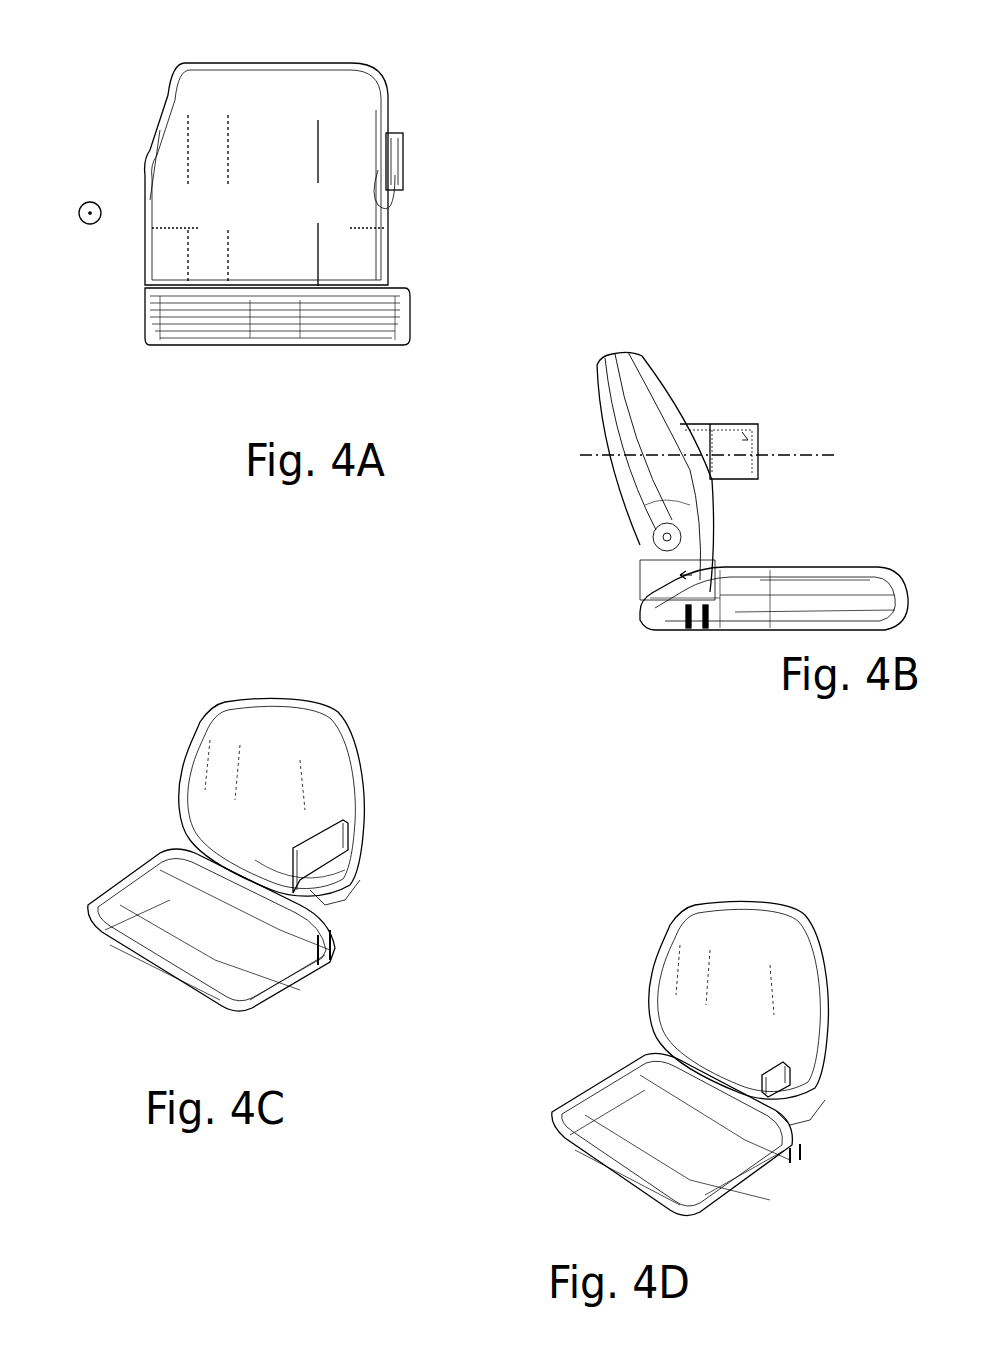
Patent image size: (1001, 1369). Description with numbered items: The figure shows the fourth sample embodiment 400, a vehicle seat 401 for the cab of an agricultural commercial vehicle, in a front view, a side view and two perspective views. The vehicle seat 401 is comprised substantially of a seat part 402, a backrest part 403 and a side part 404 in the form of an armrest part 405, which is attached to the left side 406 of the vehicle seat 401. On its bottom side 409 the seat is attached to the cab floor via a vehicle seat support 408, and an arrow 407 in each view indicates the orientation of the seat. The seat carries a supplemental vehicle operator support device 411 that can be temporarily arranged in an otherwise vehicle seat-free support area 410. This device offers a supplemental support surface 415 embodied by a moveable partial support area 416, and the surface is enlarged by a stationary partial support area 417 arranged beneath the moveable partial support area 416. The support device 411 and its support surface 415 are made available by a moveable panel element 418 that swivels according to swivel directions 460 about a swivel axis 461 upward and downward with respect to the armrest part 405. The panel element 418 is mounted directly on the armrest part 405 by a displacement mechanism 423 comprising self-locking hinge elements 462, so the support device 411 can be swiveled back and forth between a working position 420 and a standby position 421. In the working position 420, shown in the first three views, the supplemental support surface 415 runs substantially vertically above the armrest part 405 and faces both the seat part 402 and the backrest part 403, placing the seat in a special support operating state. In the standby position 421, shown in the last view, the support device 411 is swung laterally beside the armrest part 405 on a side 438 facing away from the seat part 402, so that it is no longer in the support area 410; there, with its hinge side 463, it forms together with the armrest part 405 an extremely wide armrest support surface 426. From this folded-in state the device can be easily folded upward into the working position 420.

In FIG. 4A, the fourth sample embodiment 400 is at (751, 111).
In FIG. 4A, the vehicle seat 401 is at (228, 377).
In FIG. 4B, the vehicle seat 401 is at (519, 571).
In FIG. 4C, the vehicle seat 401 is at (357, 639).
In FIG. 4D, the vehicle seat 401 is at (531, 1171).
In FIG. 4A, the seat part 402 is at (150, 315).
In FIG. 4B, the seat part 402 is at (774, 598).
In FIG. 4C, the seat part 402 is at (130, 880).
In FIG. 4D, the seat part 402 is at (598, 1095).
In FIG. 4A, the backrest part 403 is at (296, 117).
In FIG. 4B, the backrest part 403 is at (598, 358).
In FIG. 4C, the backrest part 403 is at (255, 718).
In FIG. 4D, the backrest part 403 is at (710, 925).
In FIG. 4A, the side part 404 is at (369, 202).
In FIG. 4B, the side part 404 is at (706, 473).
In FIG. 4C, the side part 404 is at (293, 880).
In FIG. 4A, the armrest part 405 is at (404, 188).
In FIG. 4B, the armrest part 405 is at (760, 476).
In FIG. 4C, the armrest part 405 is at (300, 882).
In FIG. 4D, the armrest part 405 is at (763, 1083).
In FIG. 4A, the left side 406 is at (690, 249).
In FIG. 4C, the left side 406 is at (465, 955).
In FIG. 4D, the left side 406 is at (895, 1155).
In FIG. 4A, the forward direction 407 is at (93, 200).
In FIG. 4B, the forward direction 407 is at (896, 535).
In FIG. 4C, the forward direction 407 is at (172, 945).
In FIG. 4D, the forward direction 407 is at (640, 1145).
In FIG. 4A, the vehicle seat support 408 is at (170, 342).
In FIG. 4B, the vehicle seat support 408 is at (688, 630).
In FIG. 4C, the vehicle seat support 408 is at (305, 968).
In FIG. 4D, the vehicle seat support 408 is at (798, 1163).
In FIG. 4A, the bottom side 409 is at (266, 358).
In FIG. 4B, the bottom side 409 is at (729, 645).
In FIG. 4C, the bottom side 409 is at (252, 1012).
In FIG. 4D, the bottom side 409 is at (768, 1190).
In FIG. 4A, the vehicle seat-free support area 410 is at (373, 155).
In FIG. 4B, the vehicle seat-free support area 410 is at (773, 432).
In FIG. 4C, the vehicle seat-free support area 410 is at (369, 811).
In FIG. 4D, the vehicle seat-free support area 410 is at (776, 1056).
In FIG. 4A, the supplemental vehicle operator support device 411 is at (453, 138).
In FIG. 4B, the supplemental vehicle operator support device 411 is at (737, 418).
In FIG. 4C, the supplemental vehicle operator support device 411 is at (342, 842).
In FIG. 4D, the supplemental vehicle operator support device 411 is at (815, 1068).
In FIG. 4A, the supplemental support surface 415 is at (381, 145).
In FIG. 4B, the supplemental support surface 415 is at (753, 431).
In FIG. 4C, the supplemental support surface 415 is at (311, 831).
In FIG. 4D, the supplemental support surface 415 is at (767, 1063).
In FIG. 4A, the moveable partial support area 416 is at (388, 135).
In FIG. 4B, the moveable partial support area 416 is at (713, 428).
In FIG. 4C, the moveable partial support area 416 is at (298, 850).
In FIG. 4D, the moveable partial support area 416 is at (761, 1073).
In FIG. 4A, the stationary partial support area 417 is at (383, 204).
In FIG. 4B, the stationary partial support area 417 is at (740, 472).
In FIG. 4A, the moveable panel element 418 is at (403, 141).
In FIG. 4B, the moveable panel element 418 is at (690, 425).
In FIG. 4C, the moveable panel element 418 is at (343, 821).
In FIG. 4D, the moveable panel element 418 is at (821, 1051).
In FIG. 4A, the working position 420 is at (301, 191).
In FIG. 4B, the working position 420 is at (801, 321).
In FIG. 4C, the working position 420 is at (204, 790).
In FIG. 4D, the standby position 421 is at (850, 959).
In FIG. 4C, the displacement mechanism 423 is at (381, 880).
In FIG. 4D, the armrest support surface 426 is at (790, 1064).
In FIG. 4C, the side 438 is at (321, 881).
In FIG. 4A, the swivel directions 460 is at (603, 100).
In FIG. 4A, the swivel axis 461 is at (405, 170).
In FIG. 4B, the swivel axis 461 is at (833, 457).
In FIG. 4C, the swivel axis 461 is at (363, 838).
In FIG. 4C, the self-locking hinge elements 462 is at (330, 860).
In FIG. 4D, the hinge side 463 is at (762, 1098).